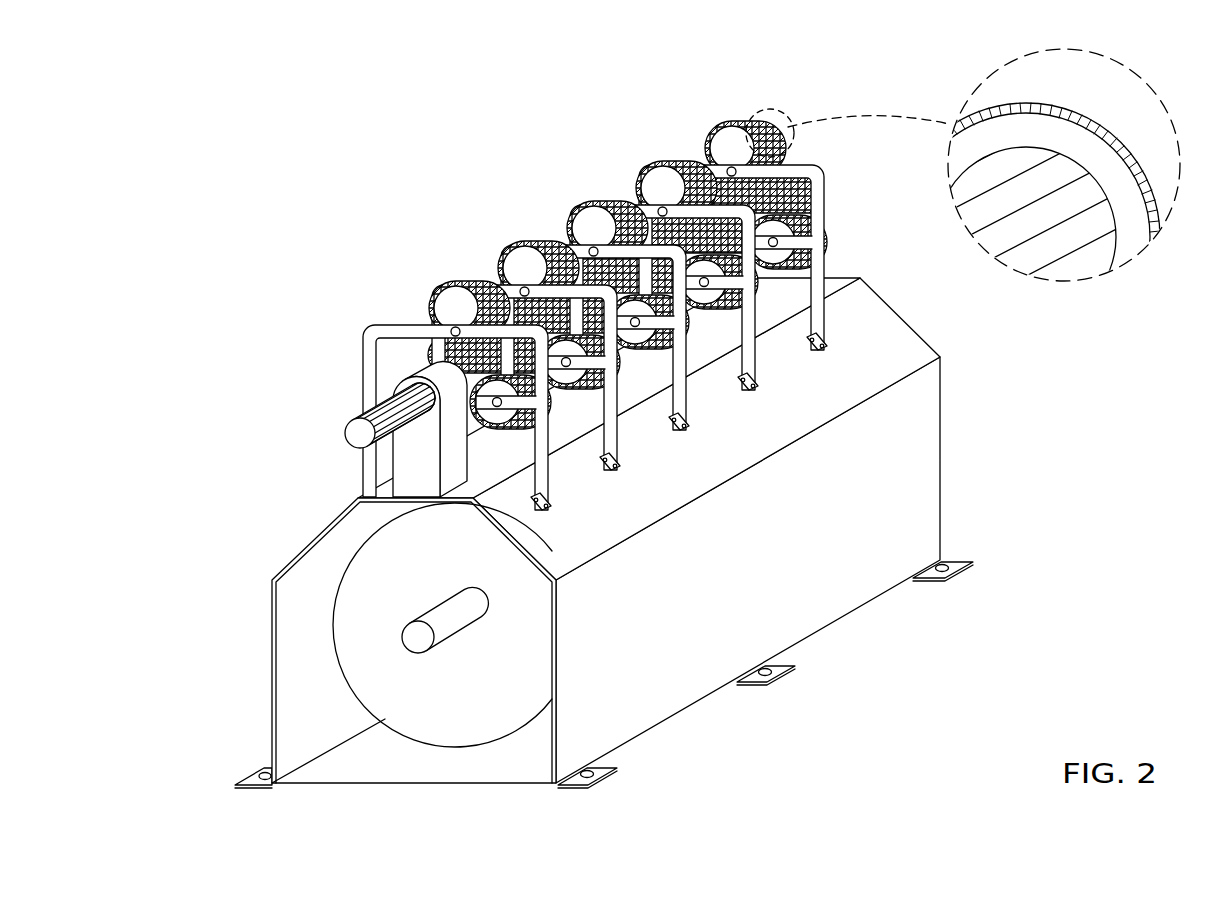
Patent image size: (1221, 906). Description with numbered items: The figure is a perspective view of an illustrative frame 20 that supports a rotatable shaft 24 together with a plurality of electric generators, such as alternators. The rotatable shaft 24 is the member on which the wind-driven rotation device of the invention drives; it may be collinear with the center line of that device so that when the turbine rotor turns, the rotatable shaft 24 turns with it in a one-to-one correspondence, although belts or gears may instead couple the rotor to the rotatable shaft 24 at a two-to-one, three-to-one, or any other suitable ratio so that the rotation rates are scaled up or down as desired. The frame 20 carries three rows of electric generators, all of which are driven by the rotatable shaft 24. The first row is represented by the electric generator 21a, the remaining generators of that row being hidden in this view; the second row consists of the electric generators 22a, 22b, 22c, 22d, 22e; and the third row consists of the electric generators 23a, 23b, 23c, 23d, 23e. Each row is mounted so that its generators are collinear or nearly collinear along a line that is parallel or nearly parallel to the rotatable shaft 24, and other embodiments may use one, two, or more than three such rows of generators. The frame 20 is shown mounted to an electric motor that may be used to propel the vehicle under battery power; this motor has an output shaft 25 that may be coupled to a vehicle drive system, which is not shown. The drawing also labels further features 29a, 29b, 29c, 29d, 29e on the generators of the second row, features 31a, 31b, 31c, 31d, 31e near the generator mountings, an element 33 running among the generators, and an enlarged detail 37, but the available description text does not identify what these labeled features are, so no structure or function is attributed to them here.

The frame 20 is at (305, 183).
The electric generator 21a is at (420, 367).
The electric generator 22a is at (465, 291).
The electric generator 22b is at (465, 291).
The electric generator 22c is at (569, 211).
The electric generator 22d is at (638, 172).
The electric generator 22e is at (706, 132).
The electric generator 23a is at (523, 382).
The electric generator 23b is at (523, 382).
The electric generator 23c is at (673, 322).
The electric generator 23d is at (777, 291).
The electric generator 23e is at (824, 242).
The rotatable shaft 24 is at (362, 433).
The output shaft 25 is at (416, 638).
The roller body 29a is at (477, 288).
The roller body 29b is at (477, 288).
The roller body 29c is at (578, 196).
The roller body 29d is at (647, 156).
The roller body 29e is at (715, 118).
The bracket leg 31a is at (528, 416).
The bracket leg 31b is at (648, 423).
The bracket leg 31c is at (716, 383).
The bracket leg 31d is at (785, 343).
The bracket leg 31e is at (869, 311).
The shaft 33 is at (757, 192).
The textured roller surface 37 is at (1072, 124).